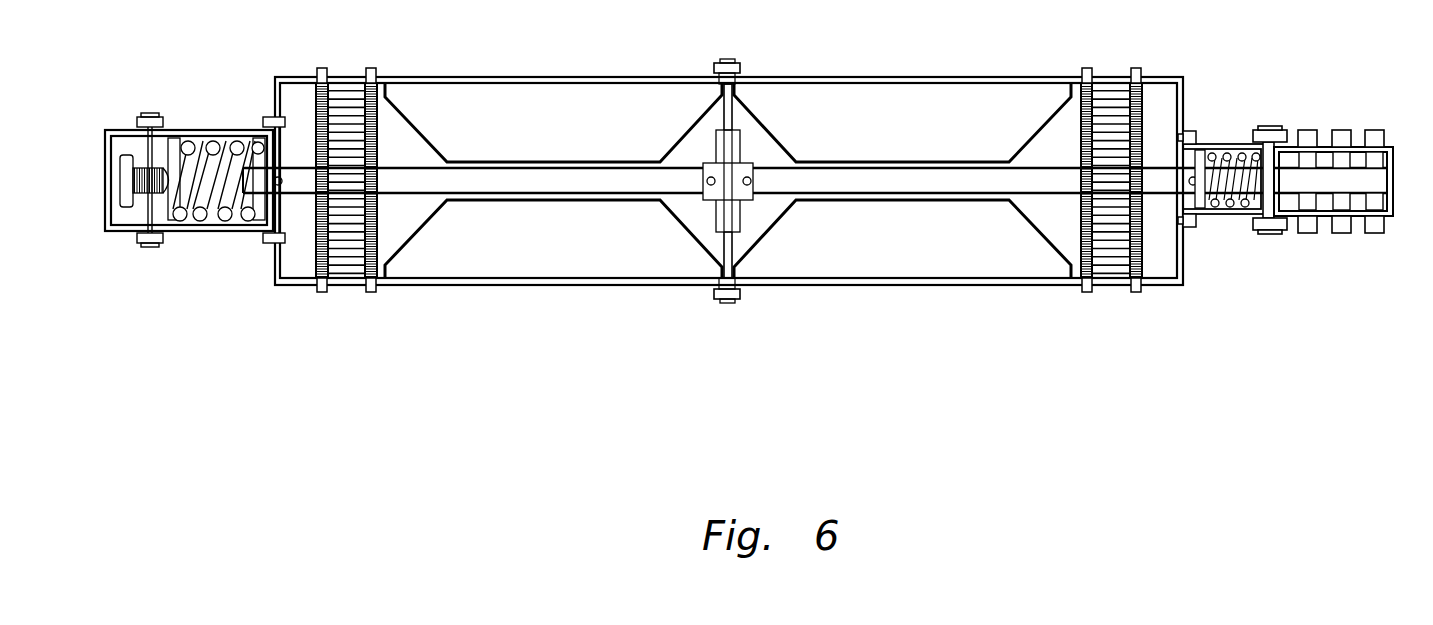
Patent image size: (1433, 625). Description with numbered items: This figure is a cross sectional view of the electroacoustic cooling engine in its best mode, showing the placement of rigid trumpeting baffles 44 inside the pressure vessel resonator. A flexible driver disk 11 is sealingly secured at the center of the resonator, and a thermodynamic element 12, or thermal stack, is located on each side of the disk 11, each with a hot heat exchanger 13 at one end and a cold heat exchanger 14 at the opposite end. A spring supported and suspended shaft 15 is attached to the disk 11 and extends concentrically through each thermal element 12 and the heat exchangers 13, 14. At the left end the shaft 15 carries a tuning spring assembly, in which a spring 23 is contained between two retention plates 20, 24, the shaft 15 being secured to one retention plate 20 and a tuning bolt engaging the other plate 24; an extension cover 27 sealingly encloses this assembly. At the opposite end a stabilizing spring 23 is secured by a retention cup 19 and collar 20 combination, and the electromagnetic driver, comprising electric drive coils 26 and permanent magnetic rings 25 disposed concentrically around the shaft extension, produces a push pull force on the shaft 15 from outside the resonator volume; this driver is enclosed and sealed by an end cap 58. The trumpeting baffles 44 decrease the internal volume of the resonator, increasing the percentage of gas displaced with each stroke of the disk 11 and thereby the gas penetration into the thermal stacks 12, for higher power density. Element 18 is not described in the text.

The flexible driver disk 11 is at (737, 117).
The thermodynamic element 12 is at (345, 95).
The hot heat exchanger 13 is at (375, 292).
The cold heat exchanger 14 is at (320, 292).
The shaft 15 is at (540, 183).
The adjustment member 18 is at (125, 158).
The retention cup 19 is at (1203, 209).
The retention plate 20 is at (1197, 158).
The spring 23 is at (1224, 155).
The retention plate 24 is at (1268, 148).
The permanent magnetic ring 25 is at (1302, 200).
The electric drive coil 26 is at (1306, 129).
The extension cover 27 is at (223, 130).
The trumpeting baffle 44 is at (893, 105).
The end cap 58 is at (1393, 178).